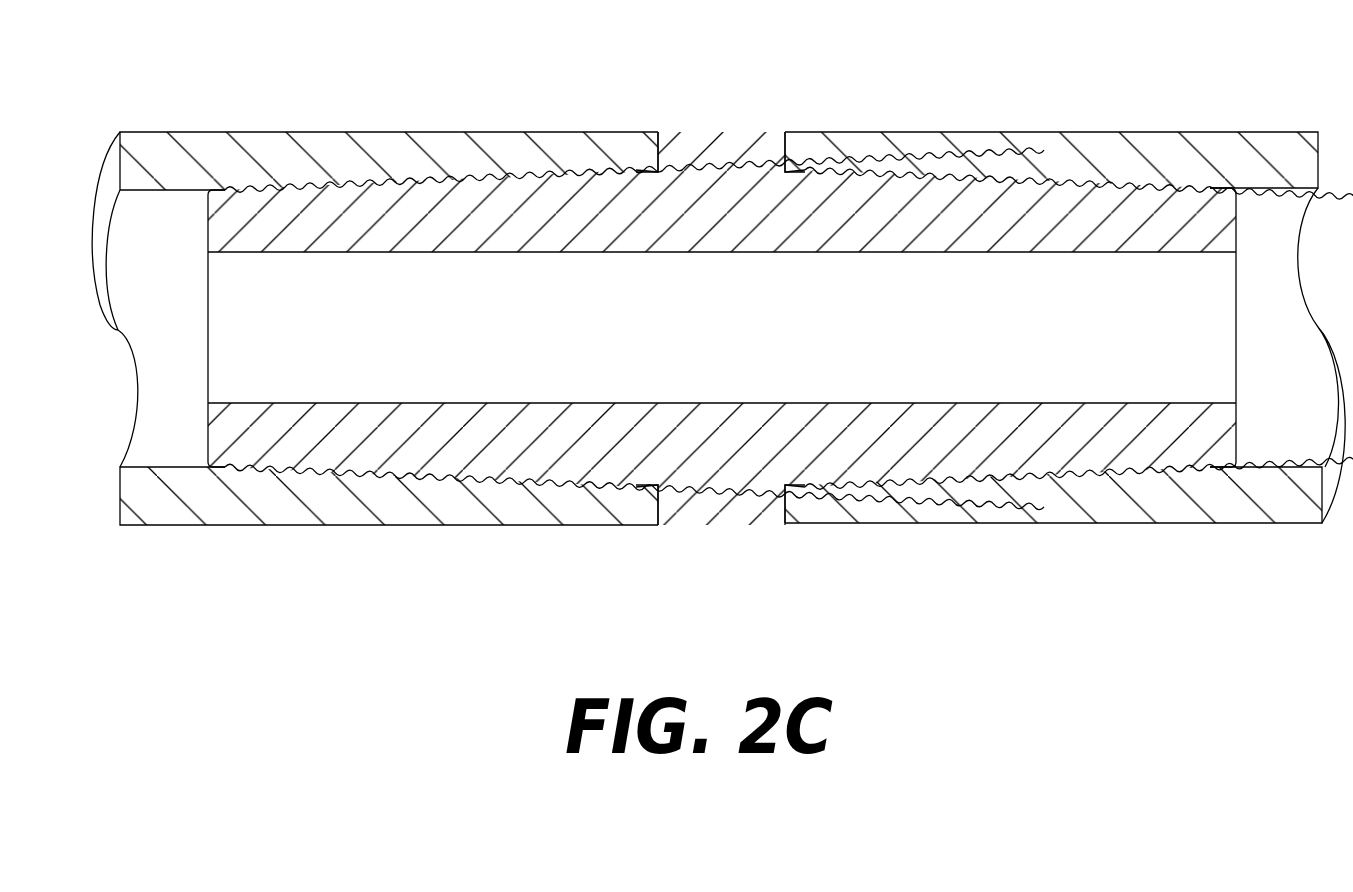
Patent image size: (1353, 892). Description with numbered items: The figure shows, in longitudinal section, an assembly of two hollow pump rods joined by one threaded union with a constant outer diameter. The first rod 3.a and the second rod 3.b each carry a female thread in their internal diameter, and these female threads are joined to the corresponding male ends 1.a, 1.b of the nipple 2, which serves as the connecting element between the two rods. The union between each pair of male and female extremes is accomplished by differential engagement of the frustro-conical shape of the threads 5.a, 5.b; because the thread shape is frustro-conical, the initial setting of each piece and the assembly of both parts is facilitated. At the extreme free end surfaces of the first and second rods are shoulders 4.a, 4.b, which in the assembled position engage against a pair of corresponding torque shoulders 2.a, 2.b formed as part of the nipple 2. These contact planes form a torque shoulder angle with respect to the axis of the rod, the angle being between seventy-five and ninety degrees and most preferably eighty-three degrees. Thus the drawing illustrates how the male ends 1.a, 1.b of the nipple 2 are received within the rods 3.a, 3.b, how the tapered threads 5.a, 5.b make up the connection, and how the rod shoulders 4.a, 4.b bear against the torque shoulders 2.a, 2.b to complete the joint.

The male end 1.a is at (465, 228).
The male end 1.b is at (1041, 224).
The nipple 2 is at (722, 309).
The torque shoulder 2.a is at (660, 138).
The torque shoulder 2.b is at (773, 140).
The rod 3.a is at (568, 363).
The rod 3.b is at (1066, 360).
The shoulder 4.a is at (637, 140).
The shoulder 4.b is at (787, 140).
The thread 5.a is at (515, 178).
The thread 5.b is at (880, 178).